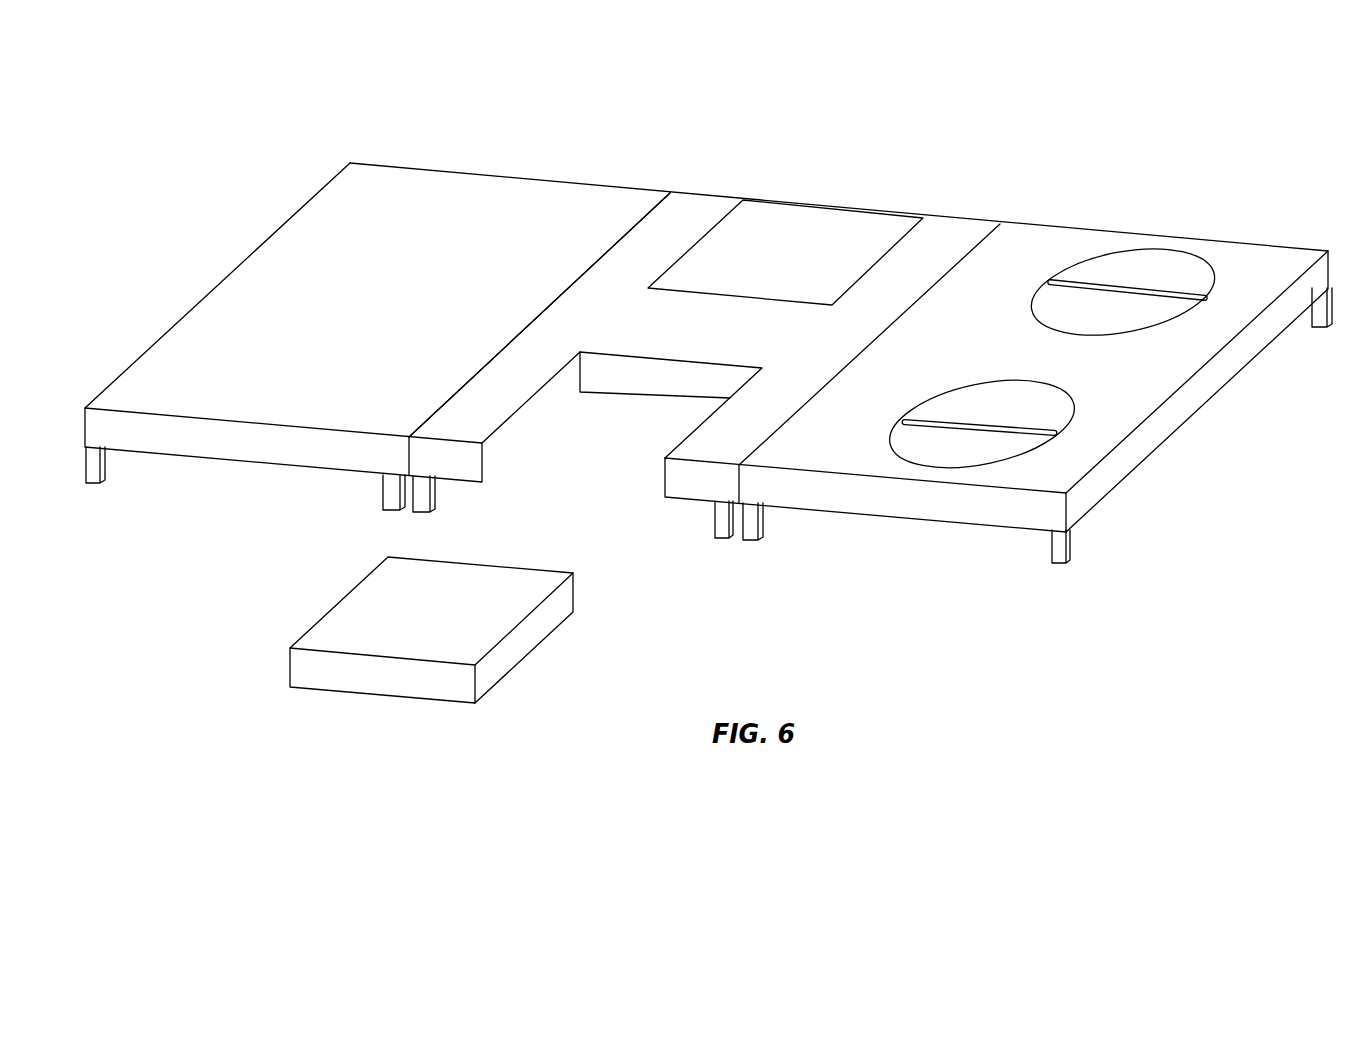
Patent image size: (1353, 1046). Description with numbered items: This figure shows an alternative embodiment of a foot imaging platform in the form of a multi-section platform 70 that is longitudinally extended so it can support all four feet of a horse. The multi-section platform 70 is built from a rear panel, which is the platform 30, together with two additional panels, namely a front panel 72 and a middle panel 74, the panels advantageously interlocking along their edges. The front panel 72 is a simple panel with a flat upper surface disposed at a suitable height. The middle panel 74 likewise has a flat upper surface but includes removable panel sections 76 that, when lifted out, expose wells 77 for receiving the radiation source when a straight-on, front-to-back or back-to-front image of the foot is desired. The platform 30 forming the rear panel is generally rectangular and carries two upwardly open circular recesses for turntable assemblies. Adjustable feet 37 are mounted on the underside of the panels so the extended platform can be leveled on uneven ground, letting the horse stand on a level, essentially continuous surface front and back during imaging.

The multi-section platform 70 is at (875, 85).
The front panel 72 is at (498, 205).
The middle panel 74 is at (912, 176).
The removable panel sections 76 is at (810, 228).
The wells 77 is at (597, 450).
The platform 30 is at (1142, 210).
The adjustable feet 37 is at (95, 460).